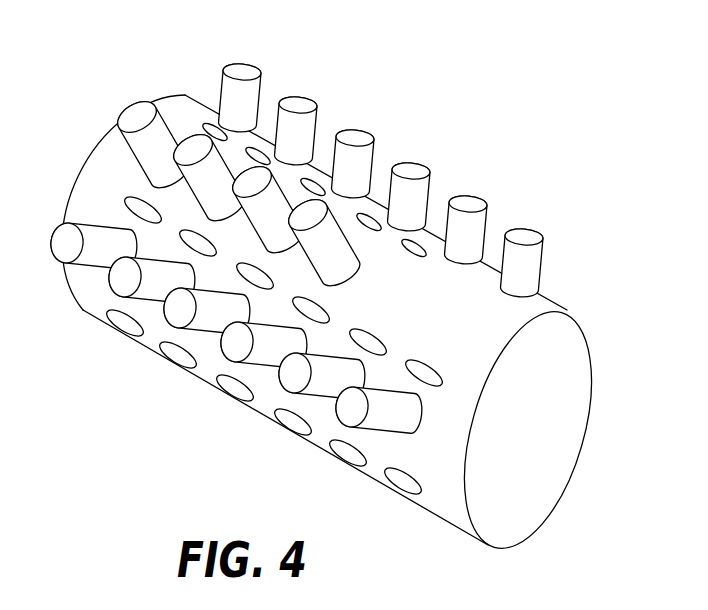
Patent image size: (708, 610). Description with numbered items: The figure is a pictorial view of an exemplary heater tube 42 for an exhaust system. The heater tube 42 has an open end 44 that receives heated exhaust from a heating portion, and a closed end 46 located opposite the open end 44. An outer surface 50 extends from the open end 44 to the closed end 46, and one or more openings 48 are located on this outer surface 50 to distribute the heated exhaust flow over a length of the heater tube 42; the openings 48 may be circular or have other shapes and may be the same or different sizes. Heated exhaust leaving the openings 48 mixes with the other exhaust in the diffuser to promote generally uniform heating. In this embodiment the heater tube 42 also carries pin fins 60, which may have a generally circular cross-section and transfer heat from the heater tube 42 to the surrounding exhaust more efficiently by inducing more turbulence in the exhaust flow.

The heater tube 42 is at (354, 291).
The open end 44 is at (594, 380).
The closed end 46 is at (88, 163).
The openings 48 is at (362, 343).
The outer surface 50 is at (90, 295).
The pin fins 60 is at (361, 130).